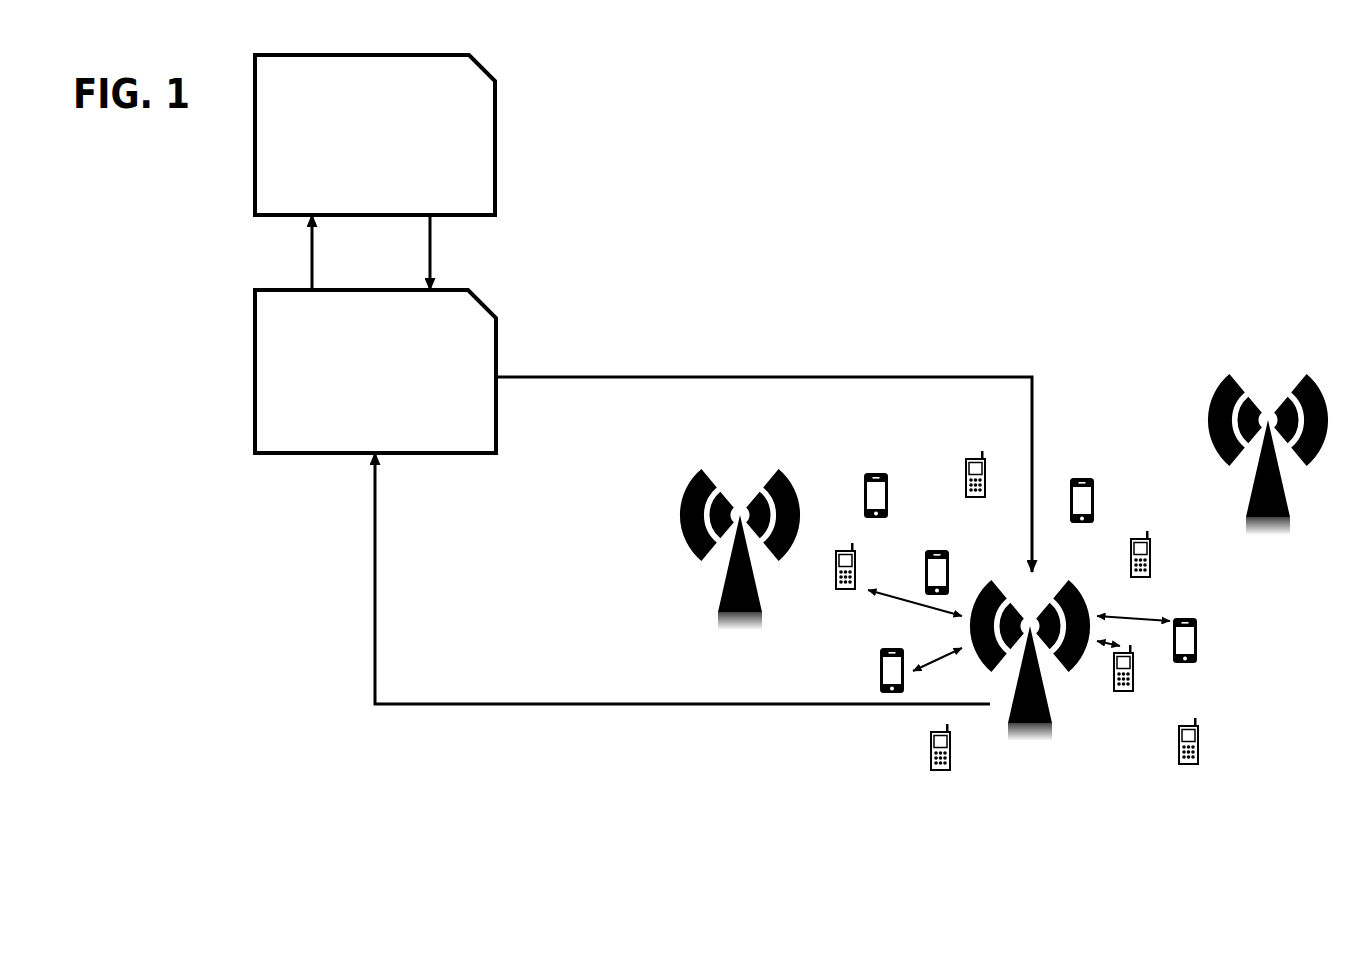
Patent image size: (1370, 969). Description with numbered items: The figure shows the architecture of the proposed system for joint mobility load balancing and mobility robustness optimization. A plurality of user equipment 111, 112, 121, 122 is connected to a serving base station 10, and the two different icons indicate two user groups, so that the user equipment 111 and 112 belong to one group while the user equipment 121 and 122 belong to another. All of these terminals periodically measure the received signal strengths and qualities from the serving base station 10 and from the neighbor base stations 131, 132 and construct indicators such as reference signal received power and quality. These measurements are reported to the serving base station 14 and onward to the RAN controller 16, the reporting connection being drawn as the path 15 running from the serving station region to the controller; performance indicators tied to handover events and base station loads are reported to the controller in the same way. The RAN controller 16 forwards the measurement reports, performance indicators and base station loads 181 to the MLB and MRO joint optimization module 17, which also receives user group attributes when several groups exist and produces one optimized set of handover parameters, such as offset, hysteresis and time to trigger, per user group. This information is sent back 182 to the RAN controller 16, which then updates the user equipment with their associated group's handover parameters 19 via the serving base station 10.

The MLB and MRO joint optimization module 17 is at (498, 133).
The RAN controller 16 is at (308, 453).
The measurement reports, performance indicators and base station loads 181 is at (308, 253).
The optimized HO parameter sets sent back 182 is at (432, 248).
The HO parameters update 19 is at (975, 372).
The feedback link from serving BS to RAN controller 15 is at (578, 700).
The serving base station 10 is at (1055, 710).
The neighbor base station 131 is at (719, 597).
The neighbor base station 132 is at (1248, 492).
The user equipment 122 is at (878, 473).
The user equipment 121 is at (1202, 637).
The user equipment 111 is at (1138, 683).
The user equipment 112 is at (1202, 728).
The serving base station 14 is at (1143, 617).